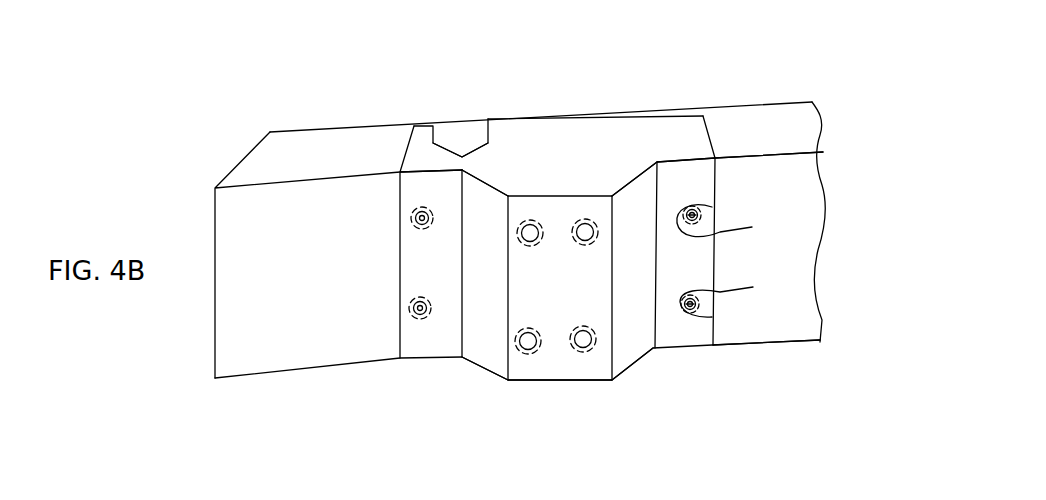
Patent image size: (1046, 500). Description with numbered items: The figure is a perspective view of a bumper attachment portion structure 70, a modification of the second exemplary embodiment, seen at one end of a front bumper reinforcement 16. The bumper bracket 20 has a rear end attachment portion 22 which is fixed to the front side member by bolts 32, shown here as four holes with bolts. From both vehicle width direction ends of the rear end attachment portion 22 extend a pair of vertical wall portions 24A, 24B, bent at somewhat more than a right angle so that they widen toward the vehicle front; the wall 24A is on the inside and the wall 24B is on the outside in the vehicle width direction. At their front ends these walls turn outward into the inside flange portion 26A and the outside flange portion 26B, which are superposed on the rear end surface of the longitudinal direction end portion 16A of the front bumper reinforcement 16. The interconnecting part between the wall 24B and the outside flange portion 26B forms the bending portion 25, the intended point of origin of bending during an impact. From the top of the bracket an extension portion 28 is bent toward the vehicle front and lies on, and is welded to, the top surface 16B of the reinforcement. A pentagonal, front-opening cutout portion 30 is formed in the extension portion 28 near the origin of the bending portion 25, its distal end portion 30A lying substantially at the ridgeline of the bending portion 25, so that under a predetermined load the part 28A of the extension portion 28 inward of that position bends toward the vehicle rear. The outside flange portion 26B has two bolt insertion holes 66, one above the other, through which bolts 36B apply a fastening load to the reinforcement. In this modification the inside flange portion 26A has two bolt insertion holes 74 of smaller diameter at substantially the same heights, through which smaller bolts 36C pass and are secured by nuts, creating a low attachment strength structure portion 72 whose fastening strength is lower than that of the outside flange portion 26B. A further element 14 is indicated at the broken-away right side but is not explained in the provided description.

The vehicle body 14 is at (822, 49).
The front bumper reinforcement 16 is at (726, 94).
The longitudinal direction end portion 16A is at (390, 122).
The top surface 16B is at (762, 117).
The bumper bracket 20 is at (612, 418).
The rear end attachment portion 22 is at (577, 372).
The vertical wall portion 24A is at (632, 350).
The vertical wall portion 24B is at (482, 357).
The bending portion 25 is at (462, 283).
The inside flange portion 26A is at (690, 342).
The outside flange portion 26B is at (425, 343).
The extension portion 28 is at (574, 140).
The part of the extension portion 28A is at (603, 142).
The cutout portion 30 is at (434, 140).
The distal end portion 30A is at (462, 157).
The bolts 32 is at (588, 326).
The bolts 36B is at (412, 318).
The bolts 36C is at (712, 317).
The bolt insertion holes 66 is at (413, 305).
The bumper attachment portion structure 70 is at (740, 367).
The low attachment strength structure portion 72 is at (774, 252).
The bolt insertion holes 74 is at (734, 261).